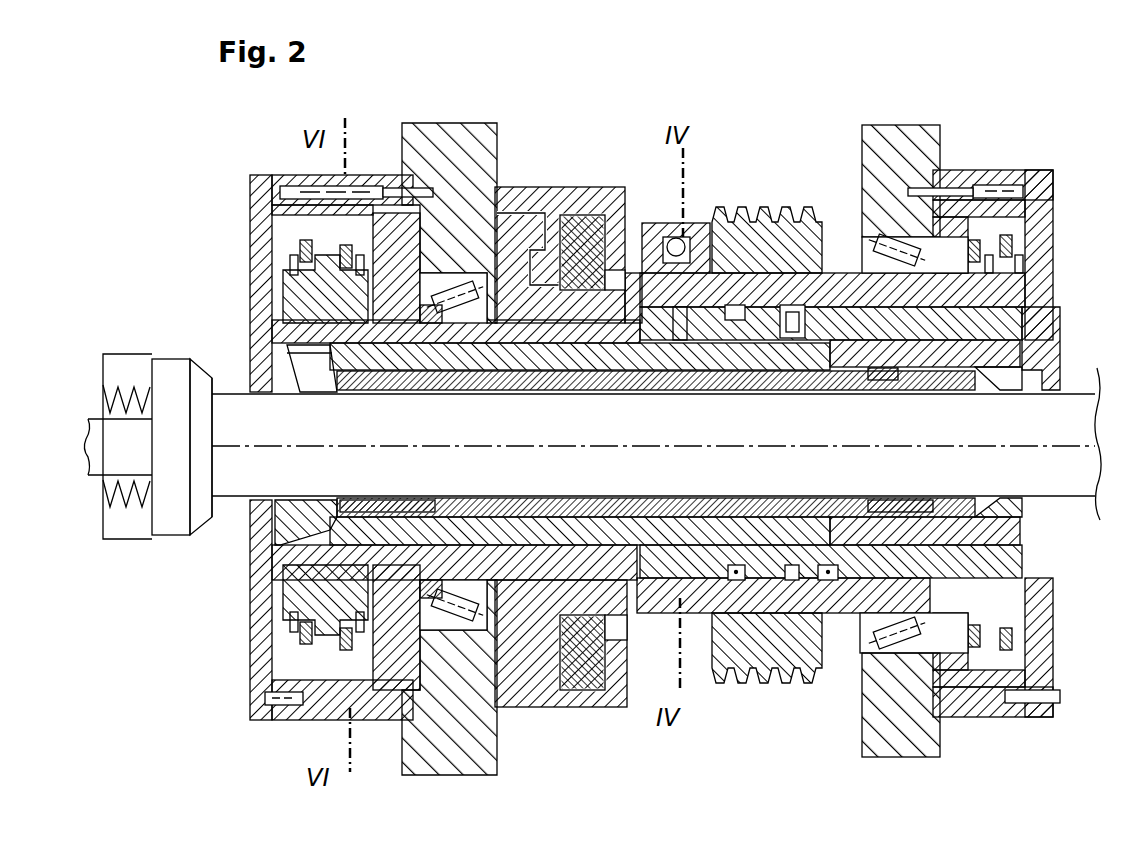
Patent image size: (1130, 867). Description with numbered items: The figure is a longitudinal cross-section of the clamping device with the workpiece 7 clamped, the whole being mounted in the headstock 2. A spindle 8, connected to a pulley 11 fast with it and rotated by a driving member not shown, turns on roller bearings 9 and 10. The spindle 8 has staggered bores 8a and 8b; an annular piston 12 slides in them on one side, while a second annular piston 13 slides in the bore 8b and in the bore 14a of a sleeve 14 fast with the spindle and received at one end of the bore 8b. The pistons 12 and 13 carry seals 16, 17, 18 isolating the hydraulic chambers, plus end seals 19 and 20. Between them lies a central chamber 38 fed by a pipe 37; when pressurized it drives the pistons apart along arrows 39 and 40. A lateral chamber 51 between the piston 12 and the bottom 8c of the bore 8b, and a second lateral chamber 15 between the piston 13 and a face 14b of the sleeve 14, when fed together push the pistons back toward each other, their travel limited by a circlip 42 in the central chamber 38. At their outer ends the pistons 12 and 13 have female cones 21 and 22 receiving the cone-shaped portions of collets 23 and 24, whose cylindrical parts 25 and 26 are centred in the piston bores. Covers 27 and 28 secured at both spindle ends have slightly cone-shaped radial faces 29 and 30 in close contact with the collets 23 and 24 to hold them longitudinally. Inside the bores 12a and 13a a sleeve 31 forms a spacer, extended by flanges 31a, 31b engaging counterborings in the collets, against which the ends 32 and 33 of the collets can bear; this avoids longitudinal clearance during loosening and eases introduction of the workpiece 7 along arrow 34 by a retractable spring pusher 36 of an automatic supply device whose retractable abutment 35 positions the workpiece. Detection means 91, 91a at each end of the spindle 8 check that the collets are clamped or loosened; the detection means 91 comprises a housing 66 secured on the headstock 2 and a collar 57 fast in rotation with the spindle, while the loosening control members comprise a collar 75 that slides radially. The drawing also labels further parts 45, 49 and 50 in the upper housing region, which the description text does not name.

The headstock 2 is at (420, 157).
The workpiece 7 is at (237, 405).
The spindle 8 is at (948, 283).
The bore 8a is at (470, 612).
The bore 8b is at (683, 600).
The bottom of the bore 8c is at (645, 565).
The roller bearing 9 is at (310, 698).
The roller bearing 10 is at (890, 233).
The pulley 11 is at (812, 242).
The annular piston 12 is at (330, 352).
The bore of piston 12a is at (600, 365).
The second annular piston 13 is at (967, 355).
The bore of piston 13a is at (815, 352).
The sleeve 14 is at (1000, 322).
The bore of sleeve 14a is at (918, 545).
The face of sleeve 14b is at (872, 560).
The second lateral chamber 15 is at (853, 567).
The seal 16 is at (723, 617).
The seal 17 is at (770, 613).
The seal 18 is at (827, 572).
The seal 19 is at (930, 513).
The seal 20 is at (372, 343).
The female cone 21 is at (305, 357).
The female cone 22 is at (987, 363).
The collet 23 is at (303, 513).
The collet 24 is at (997, 512).
The cylindrical part 25 is at (413, 372).
The cylindrical part 26 is at (880, 367).
The cover 27 is at (350, 533).
The cover 28 is at (1047, 565).
The radial face 29 is at (290, 530).
The radial face 30 is at (1032, 523).
The sleeve 31 is at (673, 510).
The flange 31a is at (400, 570).
The flange 31b is at (943, 513).
The end of collet 32 is at (440, 507).
The end of collet 33 is at (857, 385).
The arrow 34 is at (415, 472).
The retractable abutment 35 is at (1093, 520).
The retractable spring pusher 36 is at (180, 512).
The pipe 37 is at (795, 285).
The central chamber 38 is at (780, 322).
The arrow 39 is at (505, 418).
The arrow 40 is at (788, 418).
The circlip 42 is at (793, 575).
The labyrinth seal 45 is at (540, 193).
The seal 49 is at (575, 223).
The ball 50 is at (676, 247).
The lateral chamber 51 is at (682, 323).
The collar 57 is at (455, 613).
The housing 66 is at (297, 180).
The collar 75 is at (300, 250).
The detection means 91 is at (308, 170).
The detection means 91a is at (997, 168).